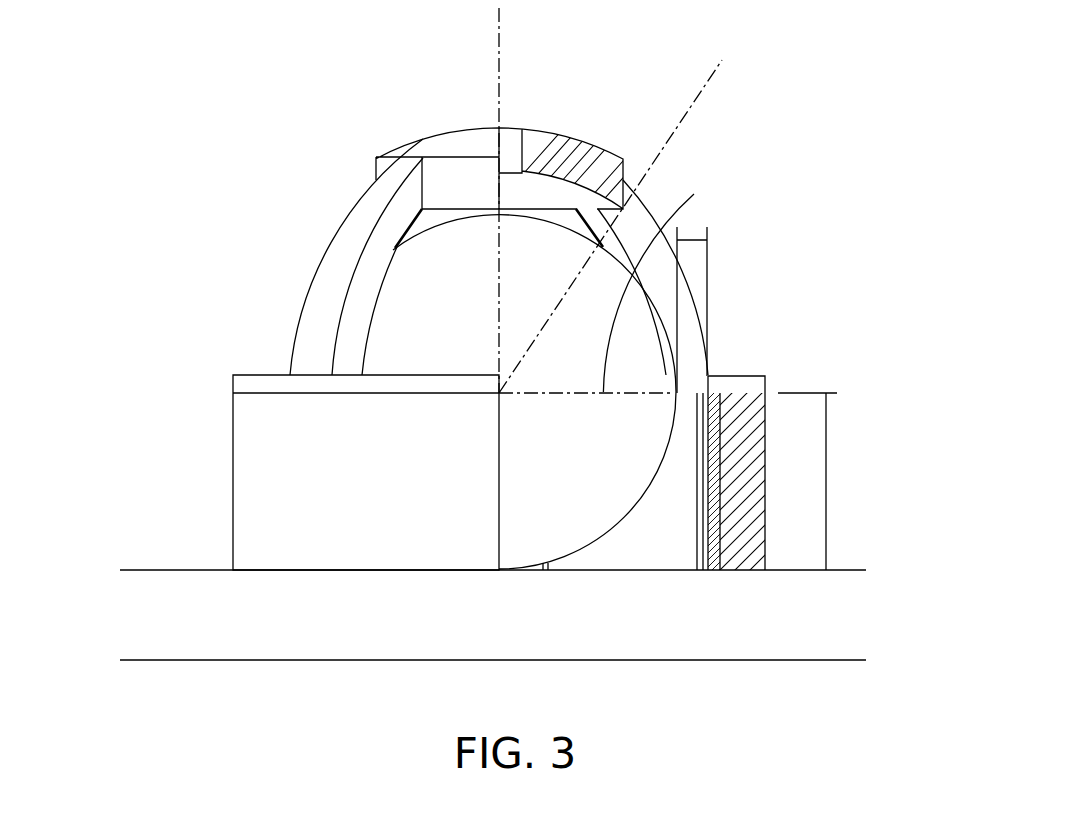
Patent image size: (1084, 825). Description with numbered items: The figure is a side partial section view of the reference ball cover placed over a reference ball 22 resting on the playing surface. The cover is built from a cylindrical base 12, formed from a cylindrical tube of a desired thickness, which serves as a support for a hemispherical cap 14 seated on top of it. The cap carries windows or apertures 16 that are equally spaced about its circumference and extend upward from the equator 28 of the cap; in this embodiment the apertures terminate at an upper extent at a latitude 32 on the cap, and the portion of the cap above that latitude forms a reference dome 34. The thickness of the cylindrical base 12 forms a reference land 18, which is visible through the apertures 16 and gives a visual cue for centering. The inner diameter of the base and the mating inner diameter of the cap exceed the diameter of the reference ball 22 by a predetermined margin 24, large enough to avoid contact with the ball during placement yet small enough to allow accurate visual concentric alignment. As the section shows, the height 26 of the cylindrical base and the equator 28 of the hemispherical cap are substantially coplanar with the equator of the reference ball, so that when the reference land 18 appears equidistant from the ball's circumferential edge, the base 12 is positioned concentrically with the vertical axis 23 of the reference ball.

The cylindrical base 12 is at (315, 470).
The hemispherical cap 14 is at (323, 283).
The apertures 16 is at (370, 258).
The reference land 18 is at (737, 393).
The reference ball 22 is at (593, 470).
The vertical axis 23 is at (499, 42).
The margin 24 is at (693, 240).
The height 26 is at (827, 480).
The equator 28 is at (694, 194).
The latitude 32 is at (703, 97).
The reference dome 34 is at (470, 140).